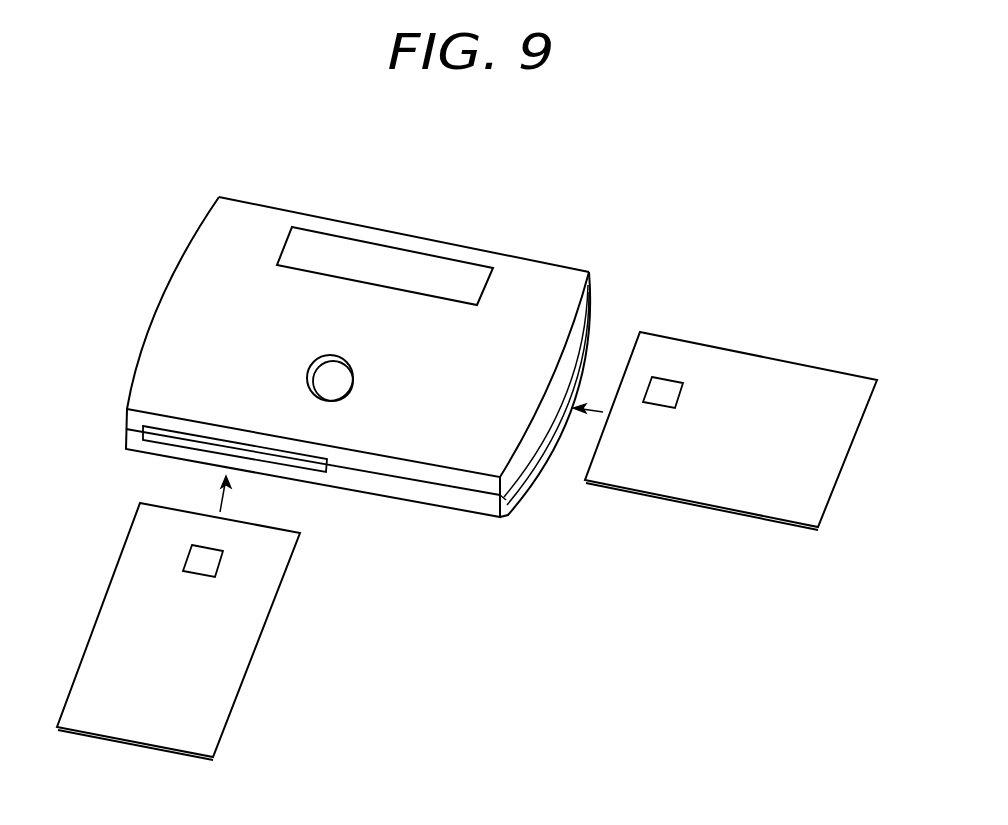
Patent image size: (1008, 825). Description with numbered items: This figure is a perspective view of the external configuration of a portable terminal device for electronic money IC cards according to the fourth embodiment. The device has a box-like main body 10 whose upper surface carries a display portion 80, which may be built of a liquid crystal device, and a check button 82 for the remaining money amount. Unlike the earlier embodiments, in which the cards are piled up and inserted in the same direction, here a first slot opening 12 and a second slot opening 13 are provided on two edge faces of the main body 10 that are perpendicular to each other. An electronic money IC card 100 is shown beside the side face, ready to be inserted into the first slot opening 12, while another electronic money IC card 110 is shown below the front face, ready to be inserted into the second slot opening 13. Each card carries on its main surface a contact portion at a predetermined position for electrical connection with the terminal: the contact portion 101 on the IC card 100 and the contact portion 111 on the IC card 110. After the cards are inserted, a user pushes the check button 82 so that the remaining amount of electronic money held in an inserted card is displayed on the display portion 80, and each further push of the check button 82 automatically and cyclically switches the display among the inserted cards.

The main body 10 is at (453, 503).
The first slot opening 12 is at (587, 345).
The second slot opening 13 is at (168, 438).
The display portion 80 is at (395, 262).
The check button 82 is at (333, 388).
The electronic money IC card 100 is at (731, 406).
The contact portion 101 is at (667, 388).
The electronic money IC card 110 is at (210, 631).
The contact portion 111 is at (210, 565).